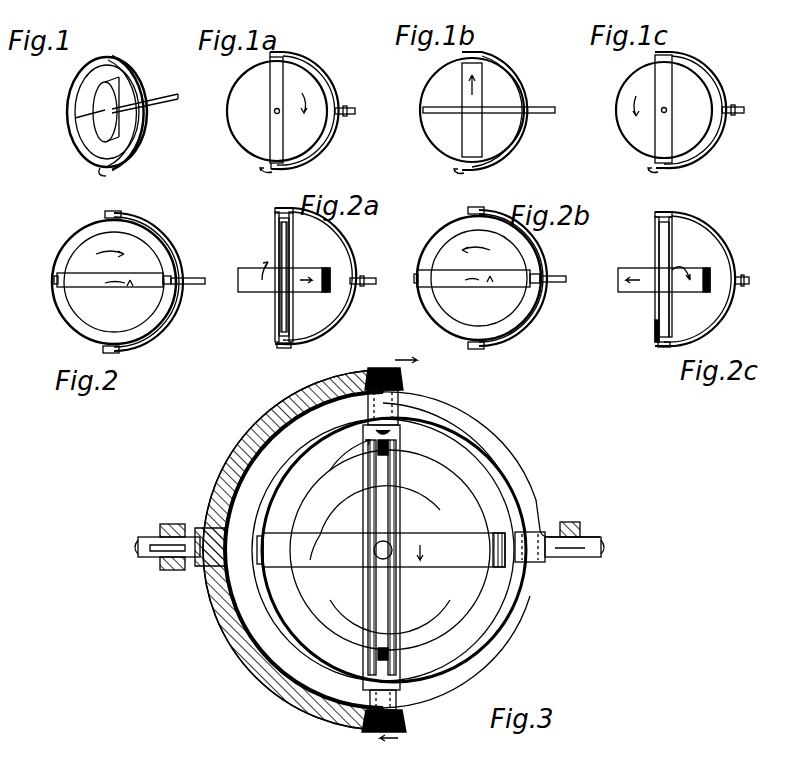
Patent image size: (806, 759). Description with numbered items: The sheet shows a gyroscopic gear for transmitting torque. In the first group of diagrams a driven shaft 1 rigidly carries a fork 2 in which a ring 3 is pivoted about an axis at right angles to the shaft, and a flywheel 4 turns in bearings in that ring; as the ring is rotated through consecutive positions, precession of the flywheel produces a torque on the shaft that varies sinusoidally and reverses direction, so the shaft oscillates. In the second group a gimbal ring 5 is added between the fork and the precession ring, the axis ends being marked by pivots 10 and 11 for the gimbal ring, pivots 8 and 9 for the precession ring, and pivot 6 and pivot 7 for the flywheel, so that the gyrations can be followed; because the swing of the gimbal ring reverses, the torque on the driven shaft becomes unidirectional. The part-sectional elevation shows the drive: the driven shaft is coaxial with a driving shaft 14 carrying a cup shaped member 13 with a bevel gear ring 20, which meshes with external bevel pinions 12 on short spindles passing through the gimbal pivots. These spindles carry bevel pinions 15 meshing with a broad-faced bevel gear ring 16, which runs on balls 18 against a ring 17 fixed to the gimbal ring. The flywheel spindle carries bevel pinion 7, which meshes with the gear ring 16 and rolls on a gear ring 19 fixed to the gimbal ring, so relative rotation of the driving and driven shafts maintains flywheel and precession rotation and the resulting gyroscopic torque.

In FIG. 1, the driven shaft 1 is at (170, 97).
In FIG. 1A, the driven shaft 1 is at (345, 106).
In FIG. 1B, the driven shaft 1 is at (547, 106).
In FIG. 1C, the driven shaft 1 is at (734, 104).
In FIG. 2, the driven shaft 1 is at (194, 278).
In FIG. 2A, the driven shaft 1 is at (364, 276).
In FIG. 2B, the driven shaft 1 is at (558, 283).
In FIG. 2C, the driven shaft 1 is at (742, 286).
In FIG. 3, the driven shaft 1 is at (582, 535).
In FIG. 1, the fork 2 is at (148, 125).
In FIG. 1A, the fork 2 is at (325, 83).
In FIG. 1B, the fork 2 is at (523, 76).
In FIG. 1C, the fork 2 is at (719, 76).
In FIG. 2, the fork 2 is at (168, 230).
In FIG. 2A, the fork 2 is at (344, 248).
In FIG. 2B, the fork 2 is at (540, 254).
In FIG. 2C, the fork 2 is at (727, 262).
In FIG. 3, the fork 2 is at (525, 485).
In FIG. 1, the precession ring 3 is at (90, 150).
In FIG. 1A, the precession ring 3 is at (270, 150).
In FIG. 1B, the precession ring 3 is at (437, 75).
In FIG. 1C, the precession ring 3 is at (655, 80).
In FIG. 2, the precession ring 3 is at (70, 292).
In FIG. 2A, the precession ring 3 is at (293, 318).
In FIG. 2B, the precession ring 3 is at (479, 278).
In FIG. 2C, the precession ring 3 is at (672, 316).
In FIG. 3, the precession ring 3 is at (278, 530).
In FIG. 1, the flywheel 4 is at (98, 122).
In FIG. 1A, the flywheel 4 is at (277, 111).
In FIG. 1B, the flywheel 4 is at (462, 133).
In FIG. 1C, the flywheel 4 is at (664, 110).
In FIG. 2, the flywheel 4 is at (117, 259).
In FIG. 2A, the flywheel 4 is at (316, 268).
In FIG. 2B, the flywheel 4 is at (476, 281).
In FIG. 2C, the flywheel 4 is at (702, 270).
In FIG. 3, the flywheel 4 is at (458, 494).
In FIG. 2, the gimbal ring 5 is at (92, 224).
In FIG. 2A, the gimbal ring 5 is at (293, 228).
In FIG. 2B, the gimbal ring 5 is at (455, 335).
In FIG. 2C, the gimbal ring 5 is at (672, 238).
In FIG. 3, the gimbal ring 5 is at (505, 620).
In FIG. 2A, the axis end of flywheel 6 is at (275, 222).
In FIG. 2B, the axis end of flywheel 6 is at (473, 278).
In FIG. 2C, the axis end of flywheel 6 is at (655, 334).
In FIG. 2, the bevel pinion 7 is at (110, 280).
In FIG. 2A, the bevel pinion 7 is at (275, 330).
In FIG. 2C, the bevel pinion 7 is at (655, 225).
In FIG. 3, the bevel pinion 7 is at (374, 550).
In FIG. 2, the pivot 8 is at (170, 285).
In FIG. 2A, the pivot 8 is at (283, 277).
In FIG. 2B, the pivot 8 is at (540, 277).
In FIG. 3, the pivot 8 is at (522, 534).
In FIG. 2, the pivot 9 is at (54, 282).
In FIG. 2B, the pivot 9 is at (415, 280).
In FIG. 2C, the pivot 9 is at (665, 274).
In FIG. 3, the pivot 9 is at (254, 550).
In FIG. 2, the pivot 10 is at (115, 212).
In FIG. 2A, the pivot 10 is at (284, 209).
In FIG. 2B, the pivot 10 is at (475, 210).
In FIG. 2C, the pivot 10 is at (662, 213).
In FIG. 3, the pivot 10 is at (368, 410).
In FIG. 2, the pivot 11 is at (103, 350).
In FIG. 2A, the pivot 11 is at (284, 348).
In FIG. 2B, the pivot 11 is at (478, 349).
In FIG. 2C, the pivot 11 is at (664, 347).
In FIG. 3, the pivot 11 is at (370, 692).
In FIG. 3, the external bevel pinion 12 is at (400, 376).
In FIG. 3, the cup shaped member 13 is at (325, 722).
In FIG. 3, the driving shaft 14 is at (172, 535).
In FIG. 3, the bevel pinion 15 is at (400, 440).
In FIG. 3, the bevel gear ring 16 is at (360, 447).
In FIG. 3, the ring 17 is at (363, 437).
In FIG. 3, the balls 18 is at (398, 480).
In FIG. 3, the gear ring 19 is at (400, 420).
In FIG. 3, the bevel gear ring 20 is at (359, 363).